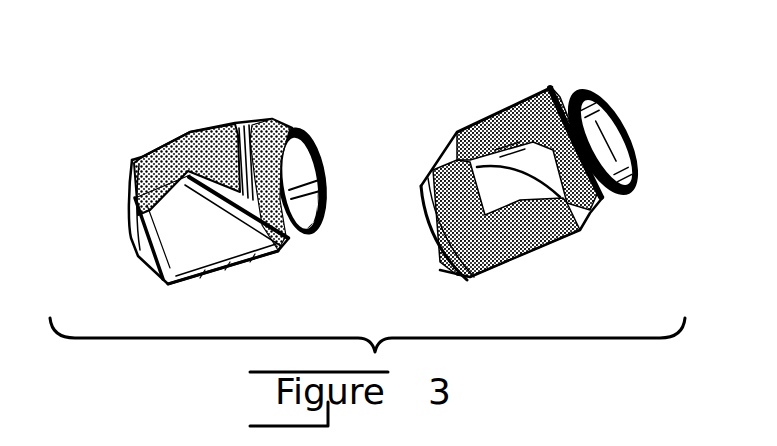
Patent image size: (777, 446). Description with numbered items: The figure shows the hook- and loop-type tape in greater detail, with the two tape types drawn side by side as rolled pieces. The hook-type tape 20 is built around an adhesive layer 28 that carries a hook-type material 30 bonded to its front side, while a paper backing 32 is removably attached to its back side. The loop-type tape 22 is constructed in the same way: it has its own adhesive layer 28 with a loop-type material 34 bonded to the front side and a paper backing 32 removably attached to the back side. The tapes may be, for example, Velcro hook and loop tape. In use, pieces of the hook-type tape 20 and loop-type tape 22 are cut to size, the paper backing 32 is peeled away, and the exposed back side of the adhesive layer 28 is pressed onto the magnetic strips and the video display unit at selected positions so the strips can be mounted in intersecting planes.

The hook-type tape 20 is at (423, 183).
The loop-type tape 22 is at (227, 189).
The adhesive layer 28 is at (130, 238).
The hook-type material 30 is at (547, 243).
The paper backing 32 is at (258, 255).
The loop-type material 34 is at (162, 142).